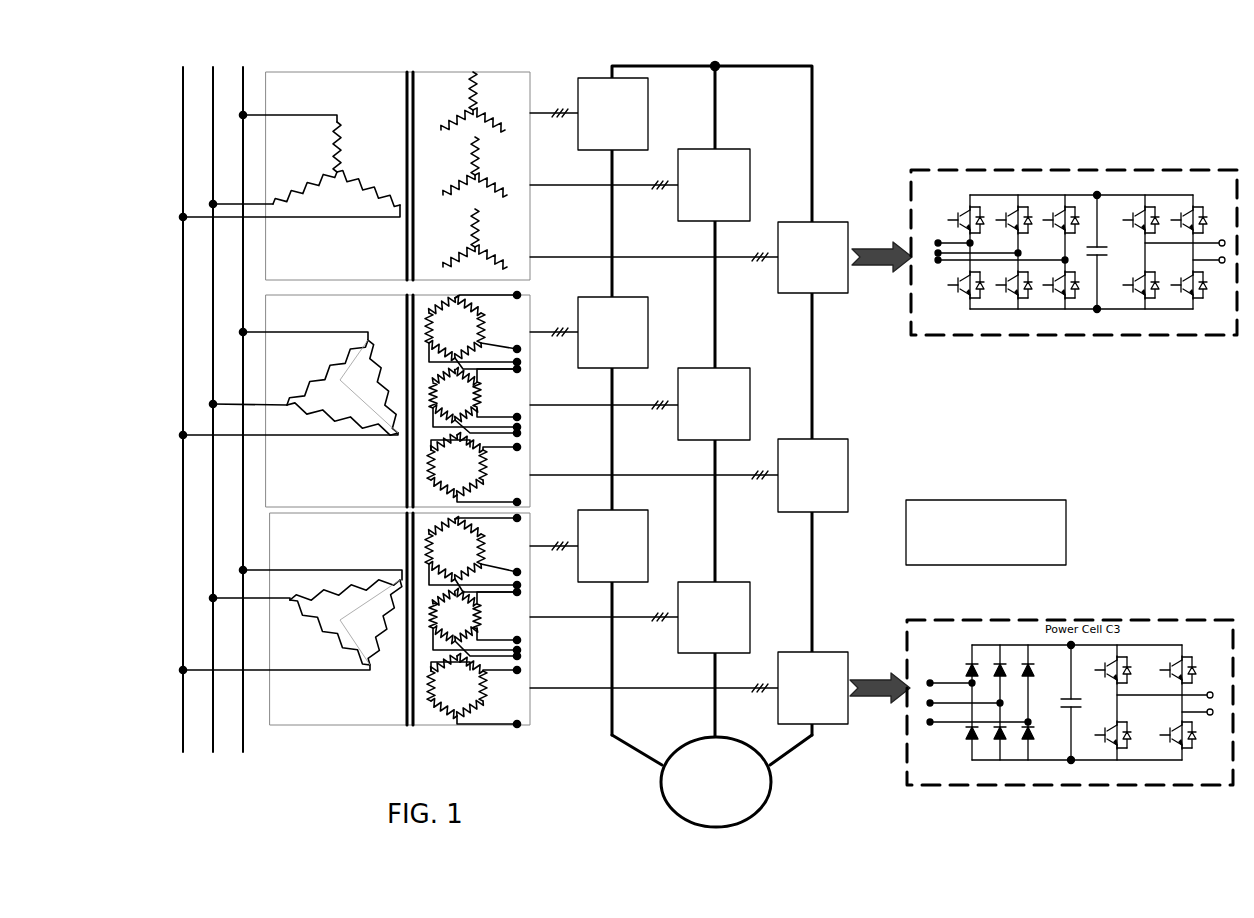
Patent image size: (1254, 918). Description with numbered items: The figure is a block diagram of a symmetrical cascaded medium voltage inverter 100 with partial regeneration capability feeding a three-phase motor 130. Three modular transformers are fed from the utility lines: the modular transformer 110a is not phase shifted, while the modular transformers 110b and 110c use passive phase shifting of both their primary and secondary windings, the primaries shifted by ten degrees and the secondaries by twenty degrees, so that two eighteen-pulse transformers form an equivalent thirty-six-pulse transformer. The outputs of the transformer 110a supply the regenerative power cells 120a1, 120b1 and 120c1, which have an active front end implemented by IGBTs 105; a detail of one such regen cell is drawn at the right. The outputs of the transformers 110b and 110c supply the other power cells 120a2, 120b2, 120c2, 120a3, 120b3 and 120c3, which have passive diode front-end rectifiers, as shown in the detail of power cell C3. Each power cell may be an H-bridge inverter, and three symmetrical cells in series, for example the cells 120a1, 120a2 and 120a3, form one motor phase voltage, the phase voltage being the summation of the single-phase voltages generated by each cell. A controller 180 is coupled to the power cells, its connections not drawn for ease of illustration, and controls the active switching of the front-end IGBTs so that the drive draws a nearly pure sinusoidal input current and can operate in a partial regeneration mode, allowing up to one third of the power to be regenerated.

The inverter 100 is at (966, 94).
The IGBTs 105 is at (1074, 230).
The modular transformer 110a is at (266, 88).
The modular transformer 110b is at (266, 303).
The modular transformer 110c is at (270, 535).
The regenerative power cell 120a1 is at (600, 77).
The regenerative power cell 120b1 is at (728, 148).
The regenerative power cell 120c1 is at (818, 220).
The power cell 120a2 is at (650, 305).
The power cell 120b2 is at (750, 378).
The power cell 120c2 is at (848, 448).
The power cell 120a3 is at (648, 518).
The power cell 120b3 is at (750, 590).
The power cell 120c3 is at (848, 725).
The motor 130 is at (752, 818).
The controller 180 is at (1032, 499).